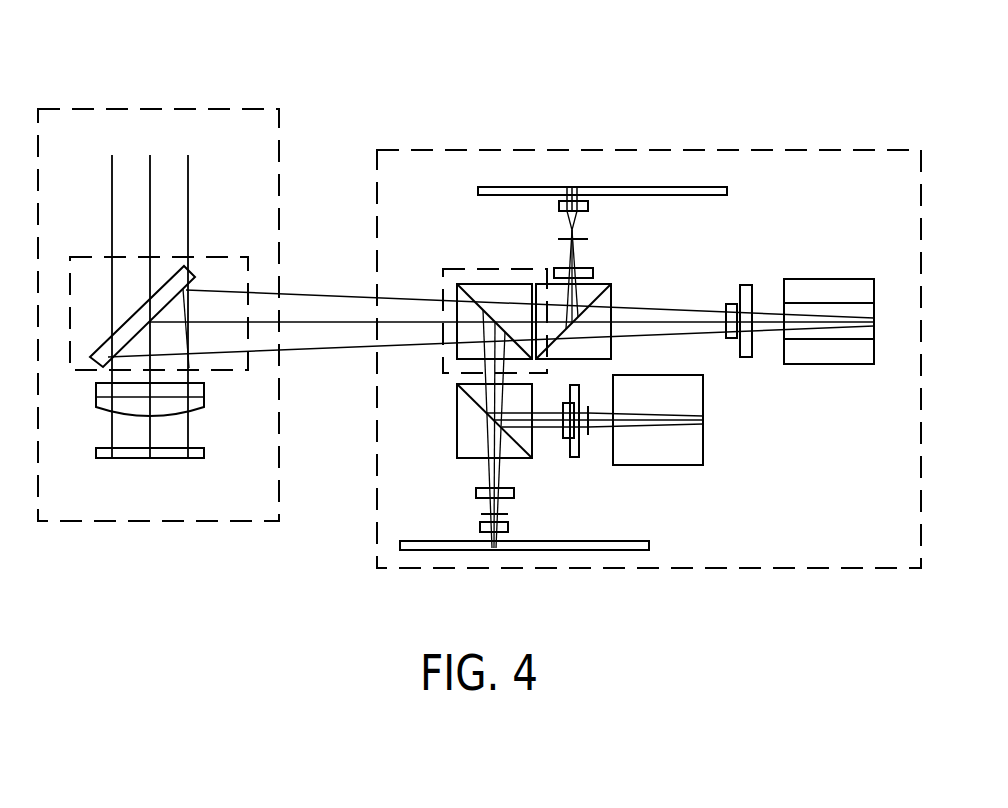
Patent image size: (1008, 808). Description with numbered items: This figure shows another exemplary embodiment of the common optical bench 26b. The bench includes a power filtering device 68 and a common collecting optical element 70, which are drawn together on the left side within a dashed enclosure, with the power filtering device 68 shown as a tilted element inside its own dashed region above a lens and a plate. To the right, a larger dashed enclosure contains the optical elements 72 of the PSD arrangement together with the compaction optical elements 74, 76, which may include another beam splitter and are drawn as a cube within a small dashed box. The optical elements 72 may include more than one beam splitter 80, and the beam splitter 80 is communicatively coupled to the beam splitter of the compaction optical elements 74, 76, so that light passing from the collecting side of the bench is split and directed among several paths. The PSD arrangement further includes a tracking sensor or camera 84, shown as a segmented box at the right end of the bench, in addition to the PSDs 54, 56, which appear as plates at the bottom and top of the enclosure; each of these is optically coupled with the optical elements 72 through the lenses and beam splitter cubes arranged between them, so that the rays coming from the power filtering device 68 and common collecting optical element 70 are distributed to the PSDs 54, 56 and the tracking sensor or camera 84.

The common optical bench 26b is at (174, 50).
The PSD 54 is at (508, 527).
The PSD 56 is at (650, 187).
The power filtering device 68 is at (70, 304).
The common collecting optical element 70 is at (142, 374).
The optical elements 72 is at (810, 568).
The compaction optical element 74 is at (482, 238).
The compaction optical element 76 is at (461, 268).
The beam splitter 80 is at (600, 302).
The tracking sensor or camera 84 is at (829, 280).